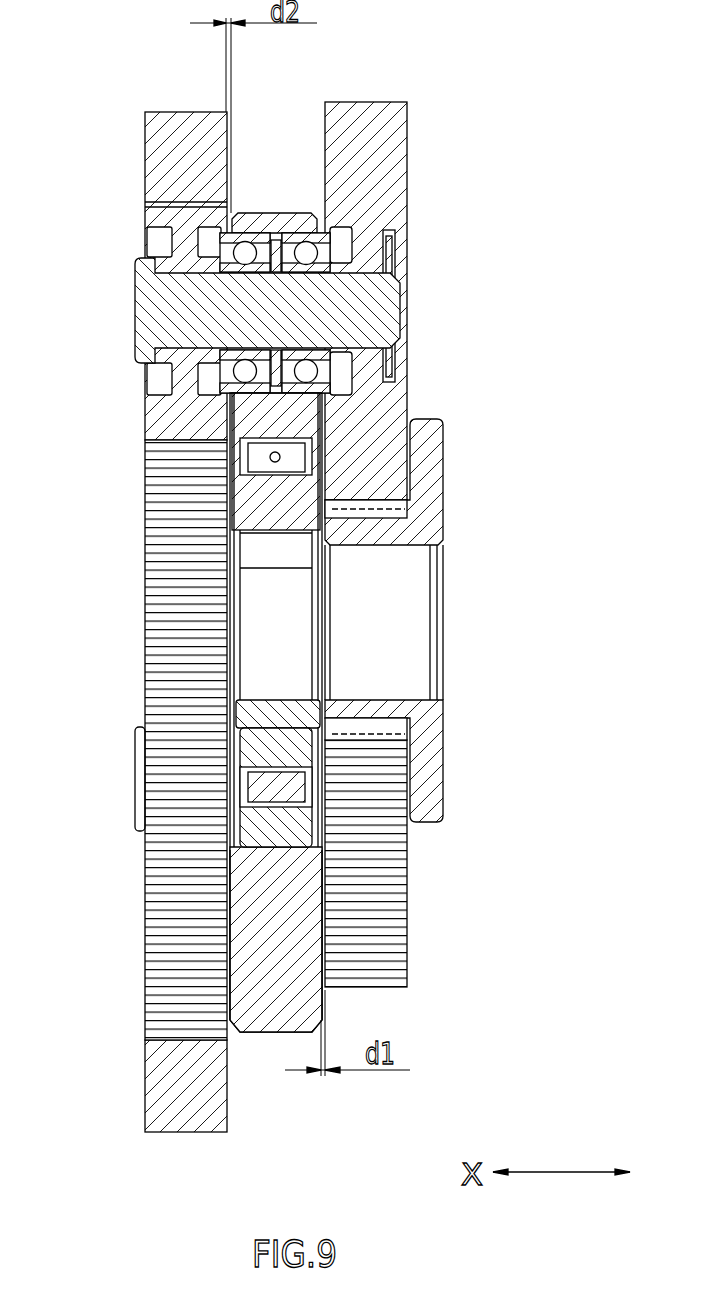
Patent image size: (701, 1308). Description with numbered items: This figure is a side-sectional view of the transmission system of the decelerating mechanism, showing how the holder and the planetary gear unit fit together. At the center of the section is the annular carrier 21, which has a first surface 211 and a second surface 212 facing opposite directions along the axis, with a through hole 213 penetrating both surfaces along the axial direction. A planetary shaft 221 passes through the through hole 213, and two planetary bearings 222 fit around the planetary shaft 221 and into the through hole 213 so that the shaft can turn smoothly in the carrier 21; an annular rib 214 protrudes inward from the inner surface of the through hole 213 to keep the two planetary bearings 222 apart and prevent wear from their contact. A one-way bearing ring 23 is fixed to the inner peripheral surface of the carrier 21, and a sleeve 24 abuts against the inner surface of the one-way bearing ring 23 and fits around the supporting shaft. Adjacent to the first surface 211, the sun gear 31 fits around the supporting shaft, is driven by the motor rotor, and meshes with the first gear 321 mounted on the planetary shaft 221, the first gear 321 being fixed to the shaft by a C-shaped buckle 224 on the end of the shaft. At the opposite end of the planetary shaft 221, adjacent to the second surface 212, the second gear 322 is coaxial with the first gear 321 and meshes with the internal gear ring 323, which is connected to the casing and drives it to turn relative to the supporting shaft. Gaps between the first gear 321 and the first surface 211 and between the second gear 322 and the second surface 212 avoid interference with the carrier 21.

The carrier 21 is at (265, 1034).
The first surface 211 is at (322, 1005).
The second surface 212 is at (232, 1000).
The through holes 213 is at (302, 232).
The annular ribs 214 is at (275, 243).
The planetary shaft 221 is at (378, 312).
The planetary bearings 222 is at (245, 250).
The buckle 224 is at (393, 248).
The one-way bearing ring 23 is at (272, 750).
The sleeve 24 is at (262, 717).
The sun gear 31 is at (352, 537).
The first gears 321 is at (388, 143).
The second gears 322 is at (152, 218).
The internal gear ring 323 is at (163, 152).